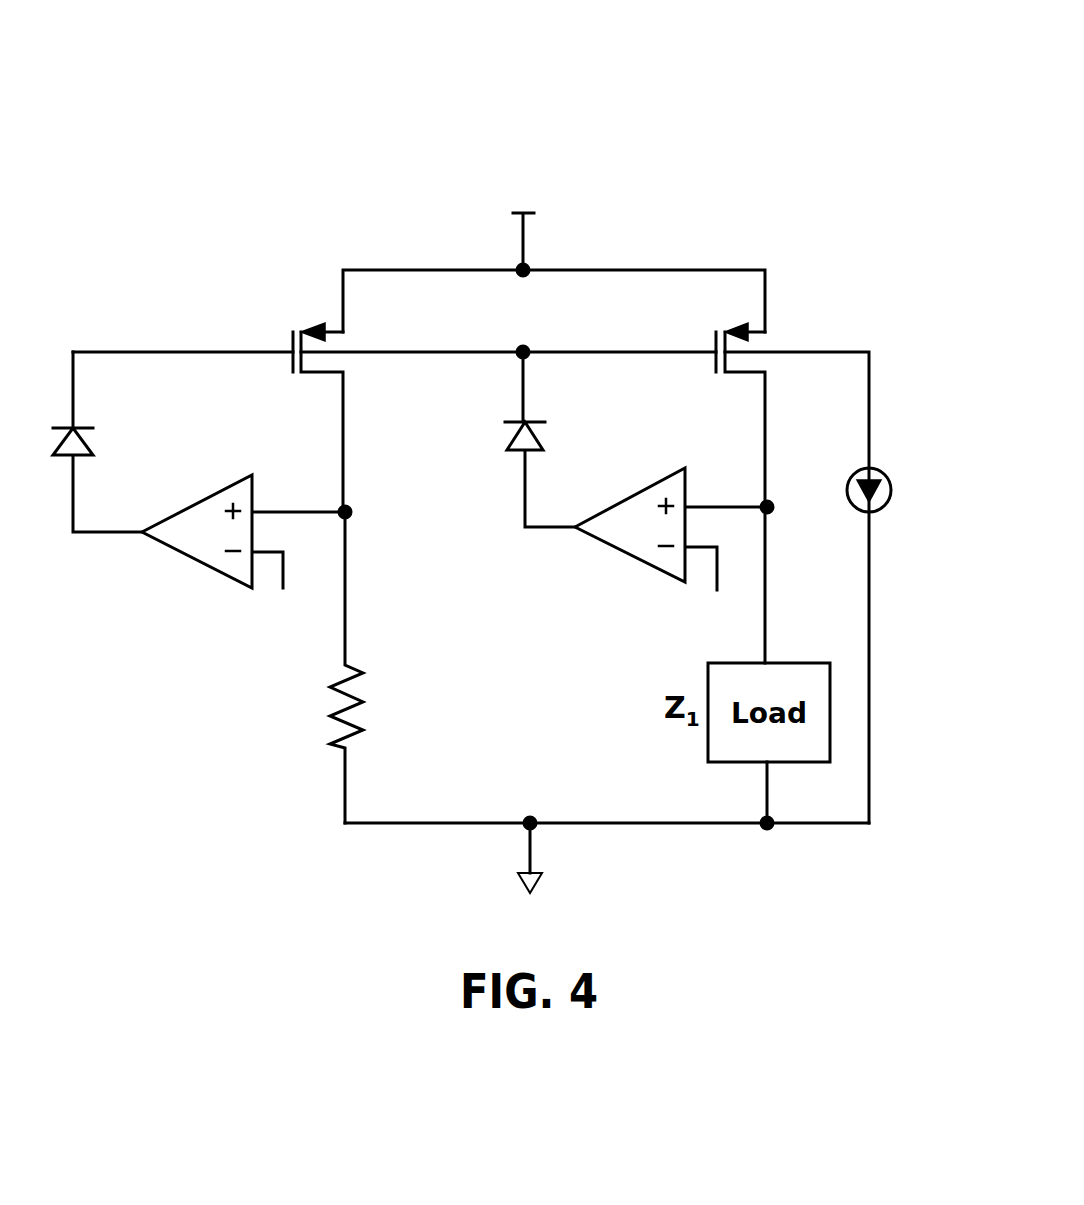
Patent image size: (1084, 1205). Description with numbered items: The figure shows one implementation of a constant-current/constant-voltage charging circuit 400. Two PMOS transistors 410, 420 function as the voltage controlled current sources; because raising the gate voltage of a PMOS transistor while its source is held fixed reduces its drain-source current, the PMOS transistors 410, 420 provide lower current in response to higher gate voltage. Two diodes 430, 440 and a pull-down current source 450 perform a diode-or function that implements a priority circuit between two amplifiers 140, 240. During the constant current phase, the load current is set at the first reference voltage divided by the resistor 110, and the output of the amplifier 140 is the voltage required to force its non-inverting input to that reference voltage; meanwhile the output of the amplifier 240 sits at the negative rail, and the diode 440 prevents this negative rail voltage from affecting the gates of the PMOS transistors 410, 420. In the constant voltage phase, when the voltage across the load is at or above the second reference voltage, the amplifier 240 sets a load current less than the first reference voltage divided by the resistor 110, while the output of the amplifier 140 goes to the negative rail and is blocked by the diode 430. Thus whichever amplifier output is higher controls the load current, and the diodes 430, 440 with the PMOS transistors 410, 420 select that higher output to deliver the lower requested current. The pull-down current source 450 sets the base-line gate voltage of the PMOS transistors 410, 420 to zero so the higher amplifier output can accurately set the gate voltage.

The circuit 400 is at (533, 112).
The PMOS transistor 410 is at (290, 345).
The PMOS transistor 420 is at (712, 345).
The diode 430 is at (88, 462).
The diode 440 is at (516, 455).
The amplifier 140 is at (160, 545).
The amplifier 240 is at (608, 507).
The resistor 110 is at (358, 715).
The pull-down current source 450 is at (891, 483).